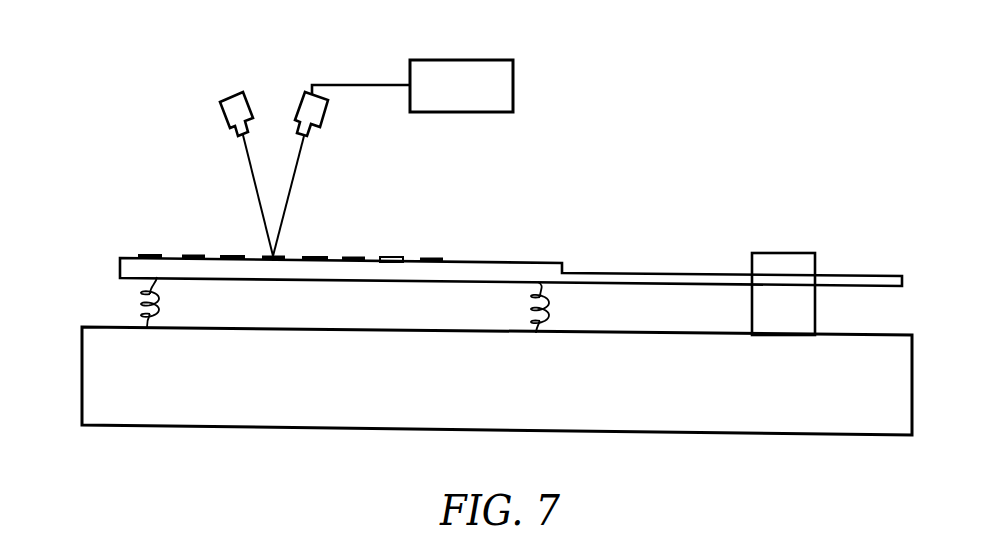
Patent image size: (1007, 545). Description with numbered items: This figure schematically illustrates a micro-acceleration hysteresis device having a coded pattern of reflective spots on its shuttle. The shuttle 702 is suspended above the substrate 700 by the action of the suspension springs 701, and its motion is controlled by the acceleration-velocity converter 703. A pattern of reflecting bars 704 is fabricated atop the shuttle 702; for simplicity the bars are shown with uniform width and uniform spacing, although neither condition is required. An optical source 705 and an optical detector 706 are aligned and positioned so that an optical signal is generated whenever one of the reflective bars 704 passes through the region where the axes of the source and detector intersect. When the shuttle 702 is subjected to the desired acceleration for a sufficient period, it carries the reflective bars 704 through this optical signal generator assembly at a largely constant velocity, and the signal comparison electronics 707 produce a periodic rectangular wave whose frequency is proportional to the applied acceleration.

The substrate 700 is at (538, 401).
The suspension springs 701 is at (530, 310).
The shuttle 702 is at (566, 273).
The acceleration-velocity converter 703 is at (803, 321).
The reflecting bars 704 is at (315, 260).
The optical source 705 is at (240, 93).
The optical detector 706 is at (307, 92).
The signal comparison electronics 707 is at (485, 99).